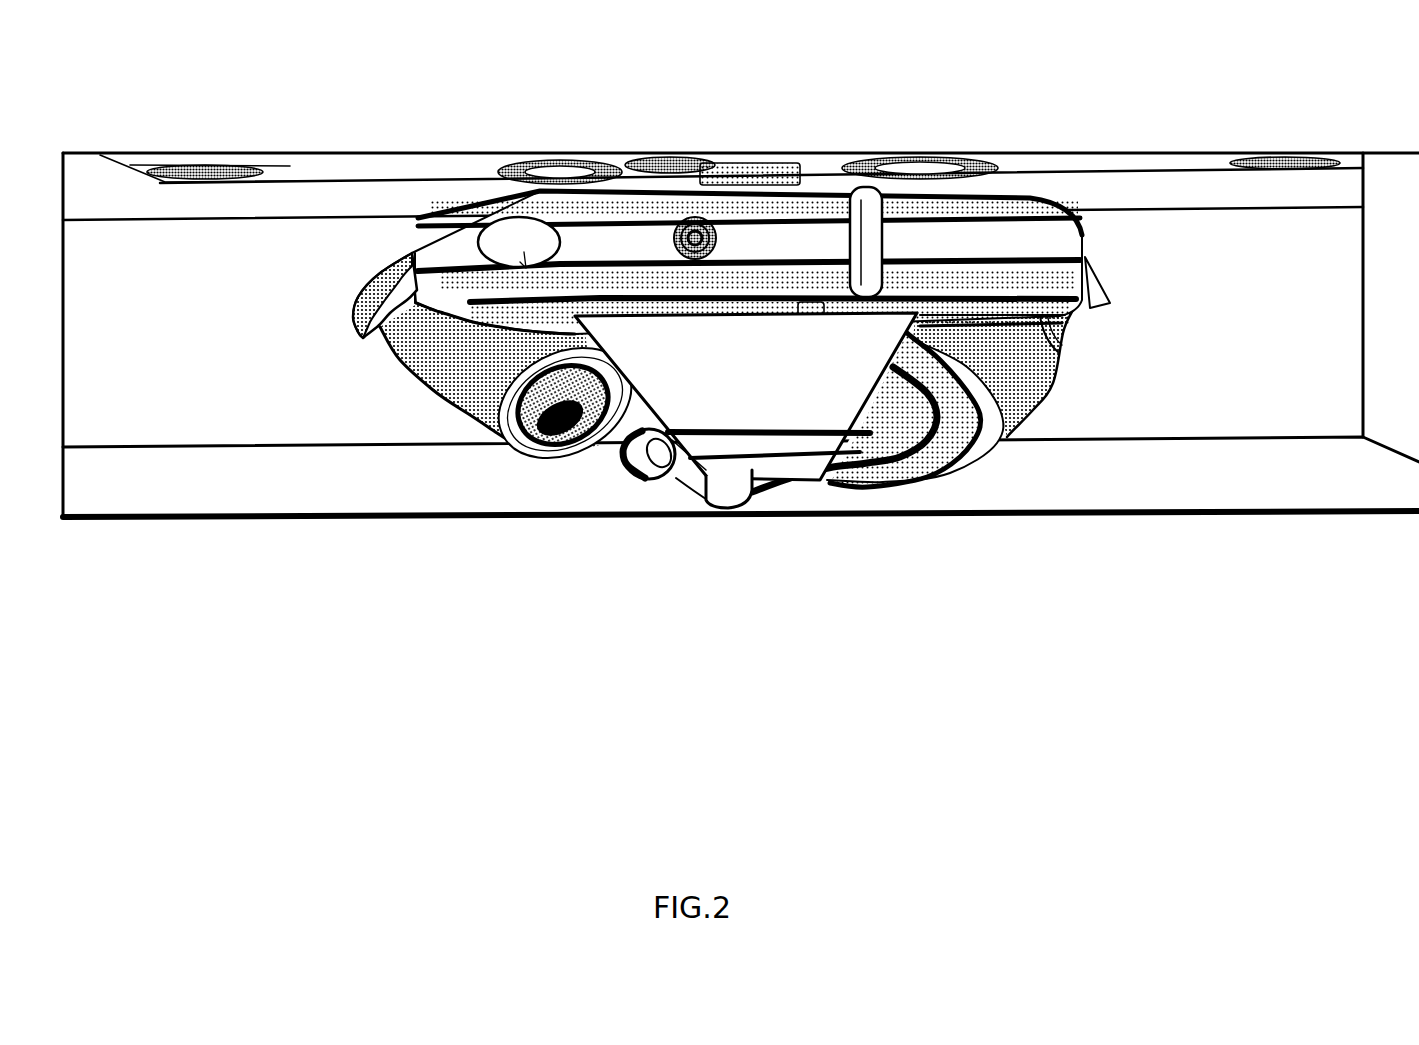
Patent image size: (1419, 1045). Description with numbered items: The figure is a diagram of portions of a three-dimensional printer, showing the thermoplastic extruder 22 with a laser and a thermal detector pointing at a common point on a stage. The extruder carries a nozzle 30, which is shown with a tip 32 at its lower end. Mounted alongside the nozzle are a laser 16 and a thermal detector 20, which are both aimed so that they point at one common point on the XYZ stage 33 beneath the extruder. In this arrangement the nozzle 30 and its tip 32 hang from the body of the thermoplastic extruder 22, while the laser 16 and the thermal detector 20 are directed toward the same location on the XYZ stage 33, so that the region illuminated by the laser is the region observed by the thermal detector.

The thermoplastic extruder 22 is at (731, 365).
The laser 16 is at (707, 480).
The thermal detector 20 is at (790, 470).
The nozzle 30 is at (780, 390).
The tip 32 is at (748, 490).
The XYZ stage 33 is at (758, 477).